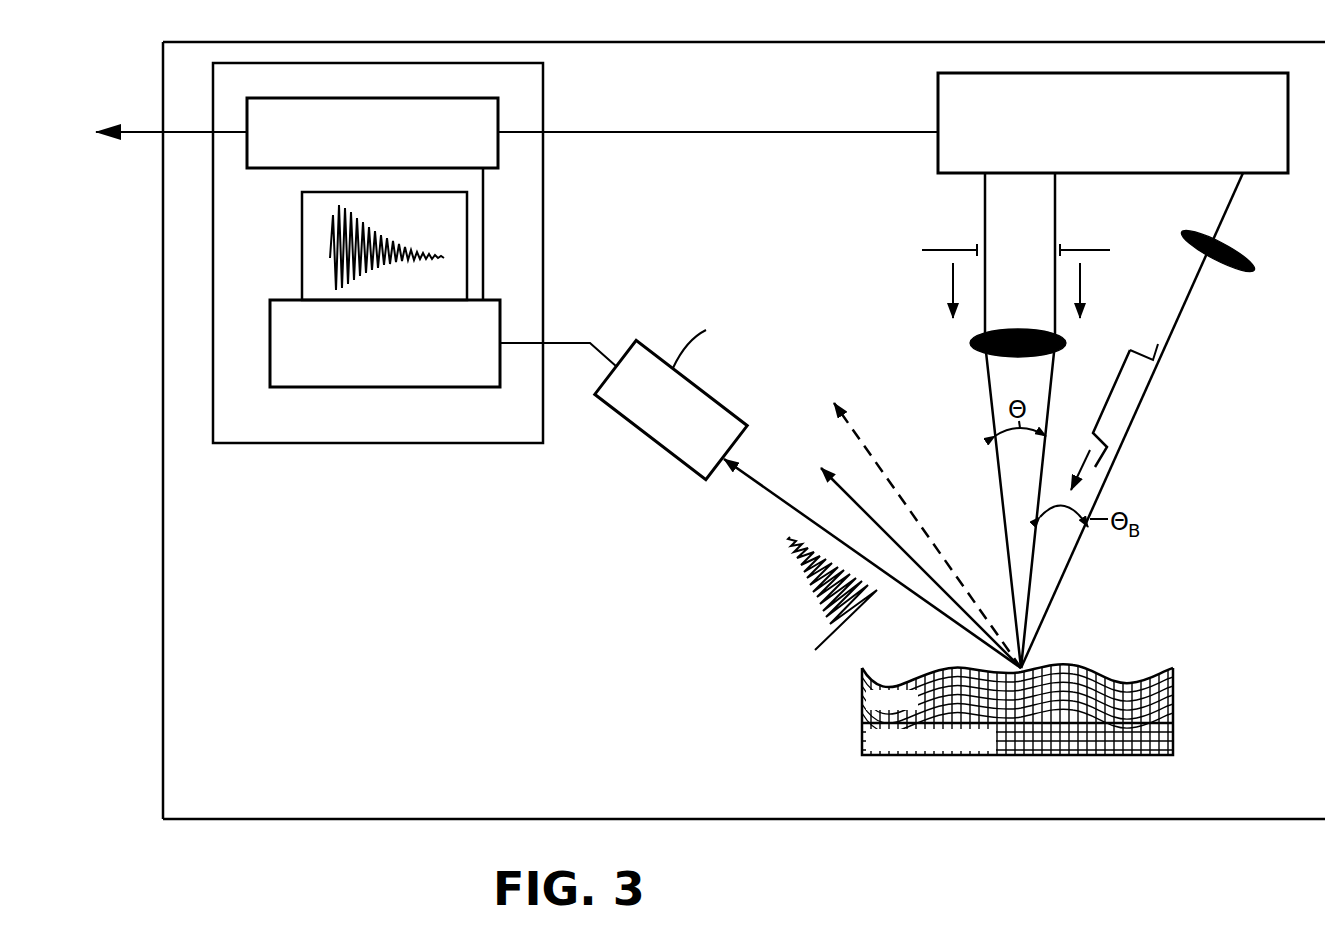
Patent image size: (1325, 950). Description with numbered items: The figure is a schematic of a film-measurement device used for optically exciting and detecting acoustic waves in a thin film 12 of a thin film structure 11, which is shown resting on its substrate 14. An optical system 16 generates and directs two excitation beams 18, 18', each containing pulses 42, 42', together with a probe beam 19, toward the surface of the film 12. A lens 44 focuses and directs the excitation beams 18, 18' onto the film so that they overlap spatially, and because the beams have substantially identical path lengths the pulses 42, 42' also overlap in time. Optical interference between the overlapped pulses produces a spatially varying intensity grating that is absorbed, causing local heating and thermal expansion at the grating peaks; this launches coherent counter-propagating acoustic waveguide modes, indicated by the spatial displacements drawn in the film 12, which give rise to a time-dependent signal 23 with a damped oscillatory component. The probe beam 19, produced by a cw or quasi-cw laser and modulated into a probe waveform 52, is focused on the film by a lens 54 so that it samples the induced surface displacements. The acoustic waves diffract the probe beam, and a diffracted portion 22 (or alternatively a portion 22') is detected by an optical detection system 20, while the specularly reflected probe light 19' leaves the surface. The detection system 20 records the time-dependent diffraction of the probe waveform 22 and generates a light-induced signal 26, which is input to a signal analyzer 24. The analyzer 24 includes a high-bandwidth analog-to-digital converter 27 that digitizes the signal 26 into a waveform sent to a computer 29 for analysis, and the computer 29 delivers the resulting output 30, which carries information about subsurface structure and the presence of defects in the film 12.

The thin film structure 11 is at (1004, 698).
The thin film 12 is at (1175, 690).
The substrate 14 is at (1175, 730).
The optical system 16 is at (1262, 150).
The excitation beam 18 is at (1068, 420).
The excitation beam 18' is at (1014, 420).
The probe beam 19 is at (1135, 420).
The reflected probe beam 19' is at (899, 540).
The optical detection system 20 is at (638, 415).
The diffracted portion of the probe beam 22 is at (869, 563).
The diffracted portion of the probe beam 22' is at (927, 532).
The time-dependent signal 23 is at (822, 584).
The signal analyzer 24 is at (556, 252).
The light-induced signal 26 is at (584, 343).
The high-bandwidth analog-to-digital converter 27 is at (269, 360).
The computer 29 is at (451, 98).
The output 30 is at (133, 136).
The excitation pulse 42 is at (1099, 256).
The excitation pulse 42' is at (934, 258).
The lens 44 is at (992, 356).
The probe waveform 52 is at (1130, 350).
The lens 54 is at (1248, 256).